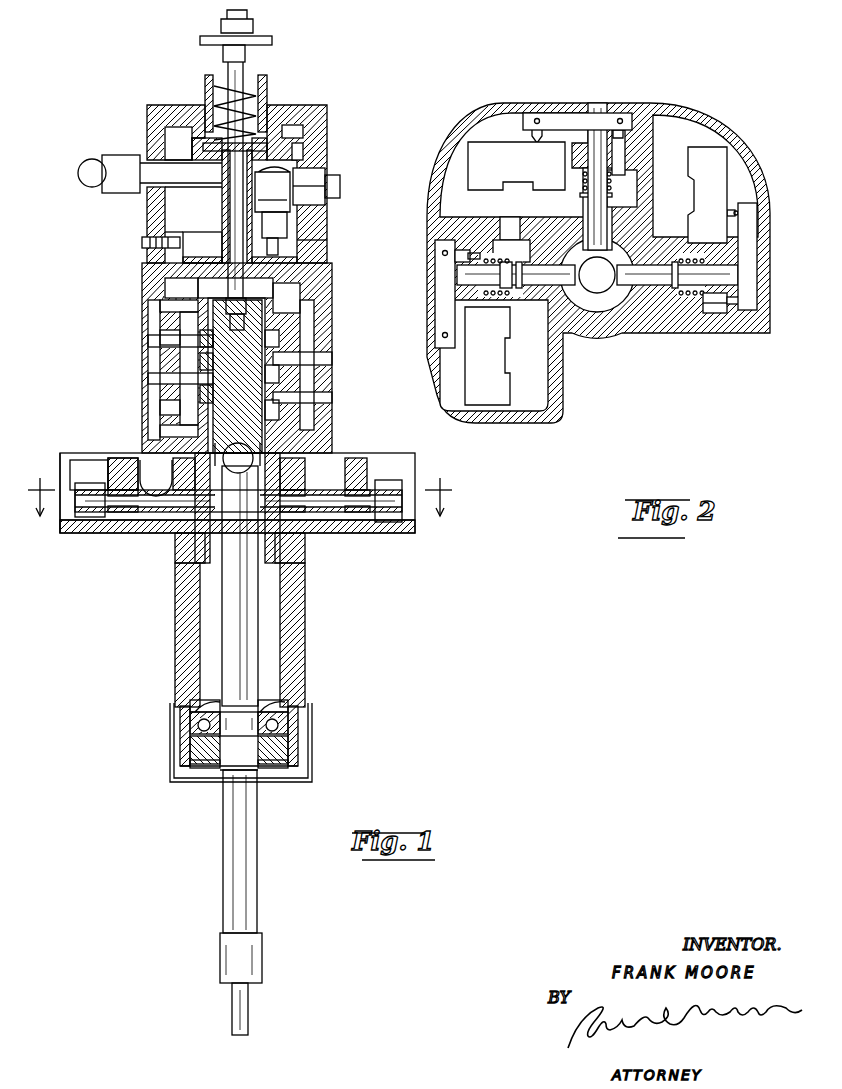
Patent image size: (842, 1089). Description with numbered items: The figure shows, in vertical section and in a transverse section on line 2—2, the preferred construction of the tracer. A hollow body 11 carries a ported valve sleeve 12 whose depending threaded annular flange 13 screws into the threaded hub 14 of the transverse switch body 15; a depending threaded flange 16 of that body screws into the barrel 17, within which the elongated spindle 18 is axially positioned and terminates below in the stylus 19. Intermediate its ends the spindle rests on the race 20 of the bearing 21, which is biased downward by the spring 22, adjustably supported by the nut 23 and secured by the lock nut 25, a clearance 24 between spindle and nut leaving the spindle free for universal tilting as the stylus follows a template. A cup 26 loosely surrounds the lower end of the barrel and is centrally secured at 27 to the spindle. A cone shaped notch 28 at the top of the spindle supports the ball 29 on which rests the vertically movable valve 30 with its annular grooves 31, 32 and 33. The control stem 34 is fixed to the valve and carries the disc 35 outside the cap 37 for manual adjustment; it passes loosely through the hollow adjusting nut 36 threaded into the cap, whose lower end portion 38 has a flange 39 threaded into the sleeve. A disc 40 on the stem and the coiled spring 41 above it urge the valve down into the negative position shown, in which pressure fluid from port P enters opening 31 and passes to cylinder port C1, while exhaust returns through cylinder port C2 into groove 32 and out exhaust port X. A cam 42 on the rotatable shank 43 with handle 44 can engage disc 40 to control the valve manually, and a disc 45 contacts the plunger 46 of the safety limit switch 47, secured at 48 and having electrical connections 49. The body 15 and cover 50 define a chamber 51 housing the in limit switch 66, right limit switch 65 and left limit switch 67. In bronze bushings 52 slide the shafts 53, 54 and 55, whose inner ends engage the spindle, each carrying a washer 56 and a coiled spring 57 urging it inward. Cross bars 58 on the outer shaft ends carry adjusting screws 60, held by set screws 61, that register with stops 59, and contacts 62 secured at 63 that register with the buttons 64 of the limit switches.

In FIG. 1, the hollow body 11 is at (142, 279).
In FIG. 1, the ported valve sleeve 12 is at (165, 290).
In FIG. 1, the threaded annular flange 13 is at (301, 465).
In FIG. 1, the threaded hub 14 is at (298, 478).
In FIG. 1, the transverse switch body 15 is at (138, 521).
In FIG. 2, the transverse switch body 15 is at (538, 421).
In FIG. 1, the threaded flange 16 is at (180, 560).
In FIG. 2, the threaded flange 16 is at (606, 300).
In FIG. 1, the barrel 17 is at (180, 600).
In FIG. 1, the spindle 18 is at (232, 814).
In FIG. 2, the spindle 18 is at (597, 275).
In FIG. 1, the stylus 19 is at (232, 1012).
In FIG. 1, the race 20 is at (258, 708).
In FIG. 1, the bearing 21 is at (190, 726).
In FIG. 1, the spring 22 is at (186, 702).
In FIG. 1, the nut 23 is at (192, 741).
In FIG. 1, the clearance 24 is at (296, 748).
In FIG. 1, the lock nut 25 is at (172, 770).
In FIG. 1, the cup 26 is at (172, 780).
In FIG. 1, the securing point 27 is at (260, 780).
In FIG. 1, the cone shaped notch 28 is at (226, 474).
In FIG. 1, the ball 29 is at (240, 470).
In FIG. 1, the valve 30 is at (237, 376).
In FIG. 1, the annular groove 31 is at (216, 367).
In FIG. 1, the annular groove 32 is at (216, 346).
In FIG. 1, the annular groove 33 is at (214, 405).
In FIG. 1, the control stem 34 is at (244, 70).
In FIG. 1, the disc 35 is at (262, 40).
In FIG. 1, the adjusting nut 36 is at (267, 90).
In FIG. 1, the cap 37 is at (148, 115).
In FIG. 1, the lower end portion 38 is at (144, 247).
In FIG. 1, the flange 39 is at (300, 285).
In FIG. 1, the disc 40 is at (316, 130).
In FIG. 1, the coiled spring 41 is at (255, 108).
In FIG. 1, the cam 42 is at (200, 150).
In FIG. 1, the shank 43 is at (122, 158).
In FIG. 1, the handle 44 is at (80, 174).
In FIG. 1, the disc 45 is at (202, 247).
In FIG. 1, the plunger 46 is at (322, 247).
In FIG. 1, the safety limit switch 47 is at (272, 211).
In FIG. 1, the securing point 48 is at (314, 154).
In FIG. 1, the electrical connections 49 is at (340, 181).
In FIG. 1, the cover 50 is at (72, 456).
In FIG. 1, the chamber 51 is at (90, 460).
In FIG. 1, the bushings 52 is at (115, 517).
In FIG. 2, the bushings 52 is at (646, 260).
In FIG. 1, the shaft 53 is at (394, 510).
In FIG. 2, the shaft 53 is at (648, 286).
In FIG. 1, the shaft 54 is at (119, 466).
In FIG. 2, the shaft 54 is at (552, 288).
In FIG. 2, the shaft 55 is at (597, 108).
In FIG. 2, the washer 56 is at (520, 288).
In FIG. 2, the coiled spring 57 is at (500, 293).
In FIG. 1, the cross bars 58 is at (400, 490).
In FIG. 2, the cross bars 58 is at (758, 248).
In FIG. 2, the stops 59 is at (626, 160).
In FIG. 2, the adjusting screws 60 is at (736, 304).
In FIG. 2, the set screw 61 is at (622, 118).
In FIG. 2, the contacts 62 is at (739, 200).
In FIG. 2, the securing point 63 is at (537, 118).
In FIG. 2, the button 64 is at (537, 143).
In FIG. 2, the right limit switch 65 is at (704, 160).
In FIG. 2, the in limit switch 66 is at (508, 180).
In FIG. 2, the left limit switch 67 is at (506, 387).
In FIG. 1, the section line 2 is at (241, 487).
In FIG. 1, the exhaust port X is at (152, 340).
In FIG. 1, the pressure port P is at (152, 379).
In FIG. 1, the cylinder port C1 is at (332, 399).
In FIG. 1, the cylinder port C2 is at (332, 358).